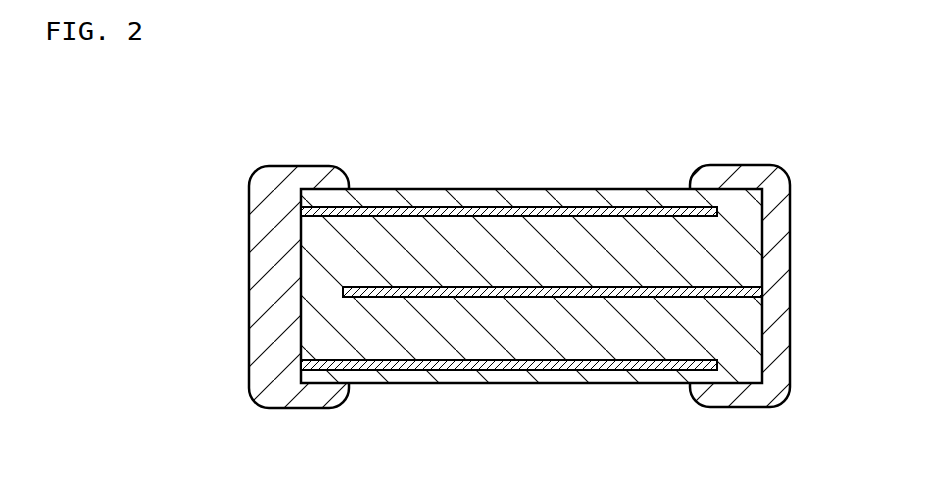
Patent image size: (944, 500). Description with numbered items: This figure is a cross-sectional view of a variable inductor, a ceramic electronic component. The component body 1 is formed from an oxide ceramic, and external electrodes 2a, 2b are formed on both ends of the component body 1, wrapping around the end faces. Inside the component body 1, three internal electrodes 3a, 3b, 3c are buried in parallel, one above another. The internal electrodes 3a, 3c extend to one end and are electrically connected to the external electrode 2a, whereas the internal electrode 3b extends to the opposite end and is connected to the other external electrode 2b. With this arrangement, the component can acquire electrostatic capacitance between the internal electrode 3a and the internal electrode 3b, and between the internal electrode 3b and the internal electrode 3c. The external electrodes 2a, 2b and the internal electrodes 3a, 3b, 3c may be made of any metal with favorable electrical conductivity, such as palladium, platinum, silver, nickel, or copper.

The component body 1 is at (612, 188).
The external electrode 2a is at (283, 185).
The external electrode 2b is at (741, 178).
The internal electrode 3a is at (533, 189).
The internal electrode 3b is at (730, 284).
The internal electrode 3c is at (598, 385).